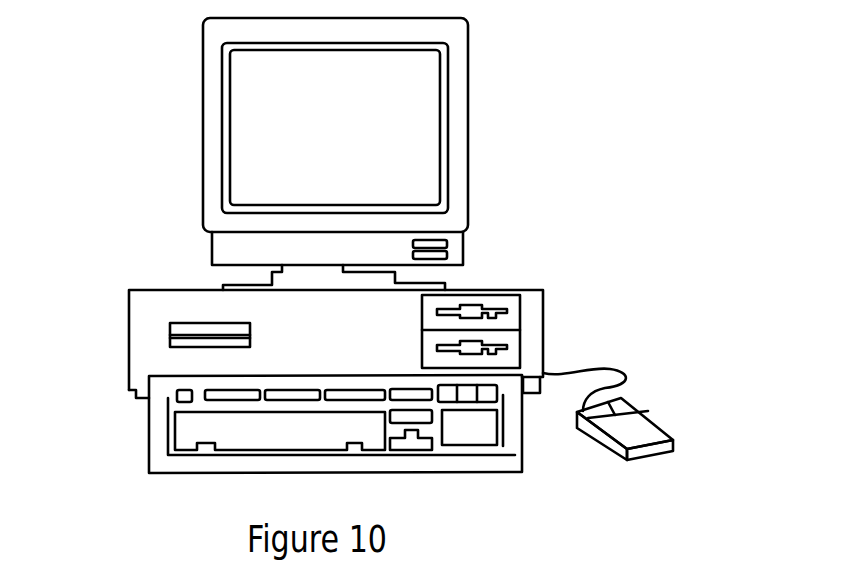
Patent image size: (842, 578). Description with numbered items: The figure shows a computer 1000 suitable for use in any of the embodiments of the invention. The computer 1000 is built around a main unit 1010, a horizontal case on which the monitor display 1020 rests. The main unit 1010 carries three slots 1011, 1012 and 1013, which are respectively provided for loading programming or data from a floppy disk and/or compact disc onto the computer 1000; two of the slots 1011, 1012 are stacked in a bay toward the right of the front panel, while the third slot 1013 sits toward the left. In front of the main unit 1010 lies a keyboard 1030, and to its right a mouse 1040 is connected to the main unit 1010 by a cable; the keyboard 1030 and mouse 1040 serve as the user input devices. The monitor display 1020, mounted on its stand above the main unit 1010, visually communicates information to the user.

The computer 1000 is at (695, 165).
The main unit 1010 is at (160, 290).
The slot 1011 is at (422, 316).
The slot 1012 is at (422, 355).
The slot 1013 is at (170, 340).
The monitor display 1020 is at (469, 117).
The keyboard 1030 is at (149, 440).
The mouse 1040 is at (655, 417).